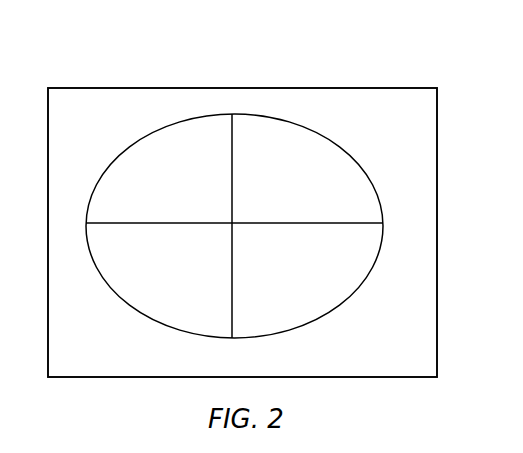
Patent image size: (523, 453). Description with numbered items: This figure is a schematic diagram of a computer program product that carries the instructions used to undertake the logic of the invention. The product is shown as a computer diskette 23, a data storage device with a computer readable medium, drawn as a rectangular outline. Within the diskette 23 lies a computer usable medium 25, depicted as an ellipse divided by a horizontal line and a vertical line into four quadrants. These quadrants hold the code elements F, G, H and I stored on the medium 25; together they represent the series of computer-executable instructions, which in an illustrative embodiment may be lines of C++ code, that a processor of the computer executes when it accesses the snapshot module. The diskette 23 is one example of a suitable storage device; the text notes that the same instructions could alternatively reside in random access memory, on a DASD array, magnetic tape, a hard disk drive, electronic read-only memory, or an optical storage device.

The computer diskette 23 is at (275, 87).
The computer usable medium 25 is at (160, 147).
The code element F is at (159, 168).
The code element G is at (307, 168).
The code element H is at (159, 280).
The code element I is at (307, 280).